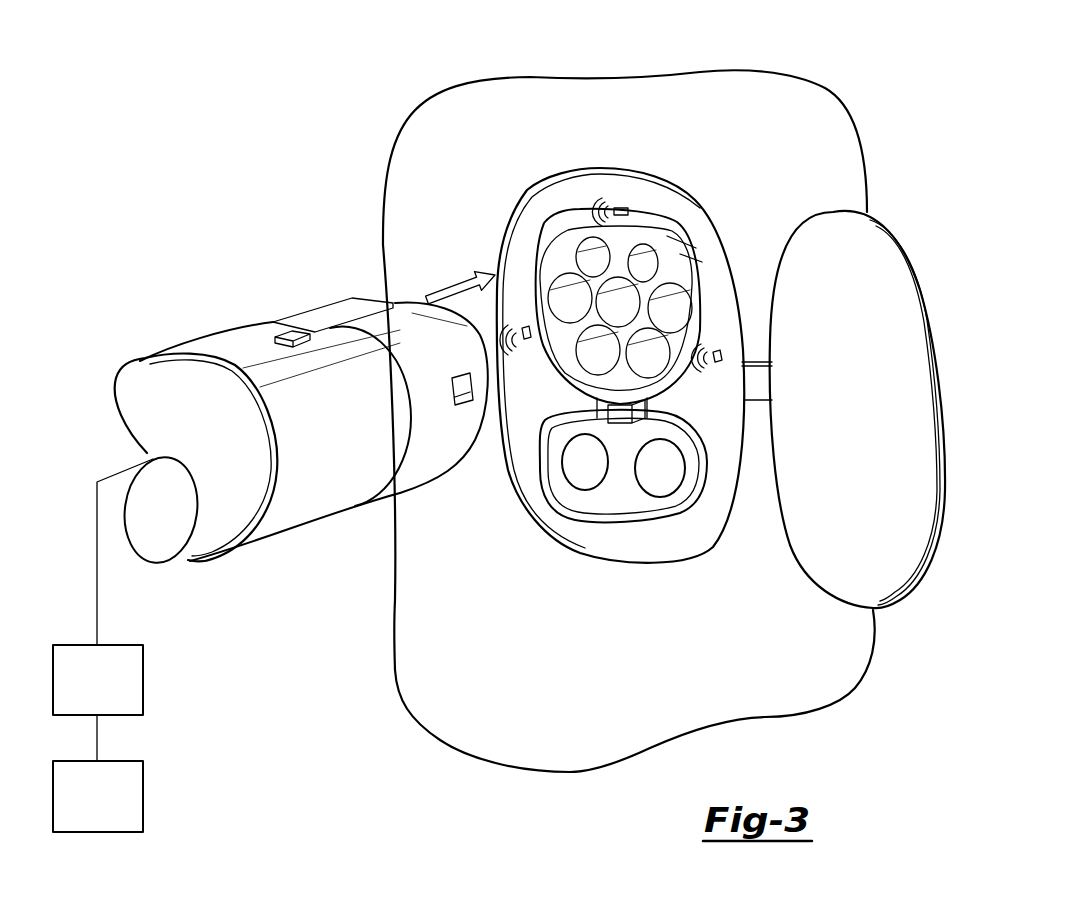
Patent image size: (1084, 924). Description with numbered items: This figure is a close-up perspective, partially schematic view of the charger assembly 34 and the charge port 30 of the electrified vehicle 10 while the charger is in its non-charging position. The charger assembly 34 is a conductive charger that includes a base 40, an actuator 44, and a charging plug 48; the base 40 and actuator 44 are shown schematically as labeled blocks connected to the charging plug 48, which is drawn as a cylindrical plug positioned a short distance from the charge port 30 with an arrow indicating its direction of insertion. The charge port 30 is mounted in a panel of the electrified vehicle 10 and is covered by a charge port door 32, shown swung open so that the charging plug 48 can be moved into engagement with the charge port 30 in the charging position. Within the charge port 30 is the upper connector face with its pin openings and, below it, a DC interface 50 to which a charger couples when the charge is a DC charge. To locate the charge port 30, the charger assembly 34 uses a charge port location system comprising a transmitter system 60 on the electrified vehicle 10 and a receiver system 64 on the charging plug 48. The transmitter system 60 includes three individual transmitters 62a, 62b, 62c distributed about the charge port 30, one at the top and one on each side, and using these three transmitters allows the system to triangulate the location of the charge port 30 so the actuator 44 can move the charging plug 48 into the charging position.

The electrified vehicle 10 is at (638, 103).
The charge port 30 is at (500, 184).
The charge port door 32 is at (893, 227).
The charger assembly 34 is at (72, 410).
The base 40 is at (84, 816).
The actuator 44 is at (84, 703).
The charging plug 48 is at (296, 503).
The DC interface 50 is at (617, 490).
The transmitter system 60 is at (608, 198).
The transmitter 62a is at (630, 208).
The transmitter 62b is at (716, 362).
The transmitter 62c is at (524, 339).
The receiver system 64 is at (291, 333).